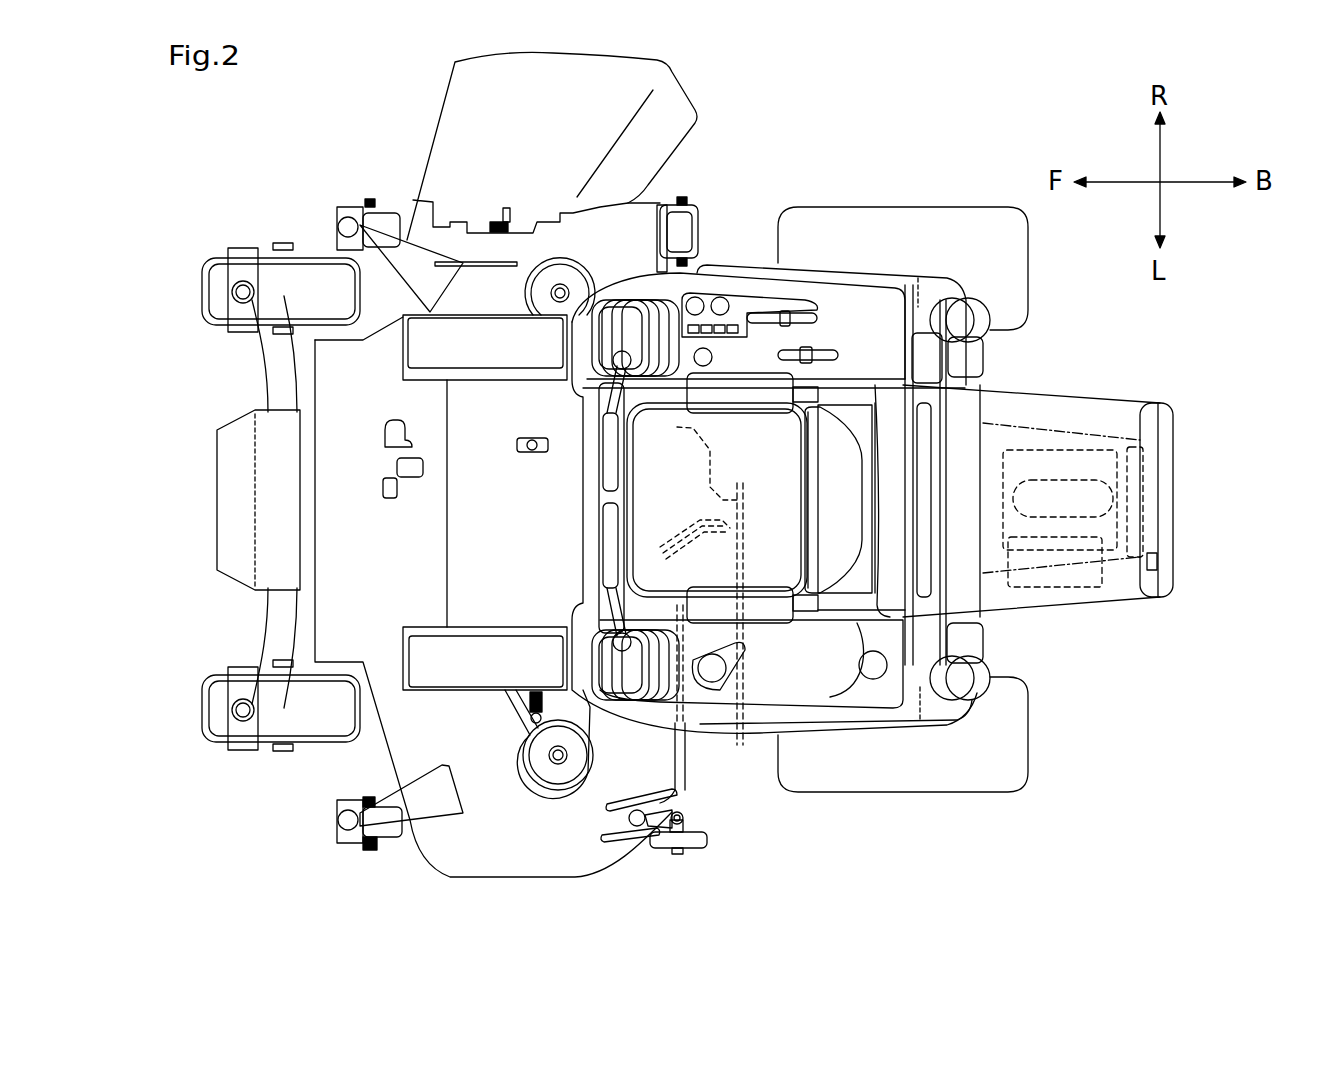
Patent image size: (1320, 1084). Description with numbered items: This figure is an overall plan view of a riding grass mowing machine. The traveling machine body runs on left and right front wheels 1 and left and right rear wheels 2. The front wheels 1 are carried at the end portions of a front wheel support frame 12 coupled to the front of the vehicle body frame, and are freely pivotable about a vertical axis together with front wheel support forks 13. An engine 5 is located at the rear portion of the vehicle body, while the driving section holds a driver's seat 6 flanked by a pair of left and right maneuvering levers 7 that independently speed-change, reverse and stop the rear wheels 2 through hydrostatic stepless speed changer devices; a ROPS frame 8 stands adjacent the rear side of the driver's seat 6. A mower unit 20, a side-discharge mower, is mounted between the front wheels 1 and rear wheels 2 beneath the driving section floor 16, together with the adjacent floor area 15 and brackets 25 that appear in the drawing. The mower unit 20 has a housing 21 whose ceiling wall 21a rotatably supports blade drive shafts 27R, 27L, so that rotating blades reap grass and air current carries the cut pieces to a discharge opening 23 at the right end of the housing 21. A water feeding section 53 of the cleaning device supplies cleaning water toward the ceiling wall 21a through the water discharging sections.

The front wheels 1 is at (205, 280).
The rear wheels 2 is at (905, 210).
The engine 5 is at (1100, 445).
The driver's seat 6 is at (762, 568).
The maneuvering levers 7 is at (605, 443).
The ROPS frame 8 is at (920, 478).
The front wheel support frame 12 is at (270, 385).
The front wheel support forks 13 is at (240, 255).
The floor step 15 is at (748, 283).
The driving section floor 16 is at (345, 545).
The mower unit 20 is at (372, 749).
The housing 21 is at (615, 866).
The ceiling wall 21a is at (462, 826).
The discharge opening 23 is at (460, 190).
The bracket 25 is at (388, 213).
The drive shaft 27R is at (557, 288).
The drive shaft 27L is at (556, 762).
The water feeding section 53 is at (637, 810).